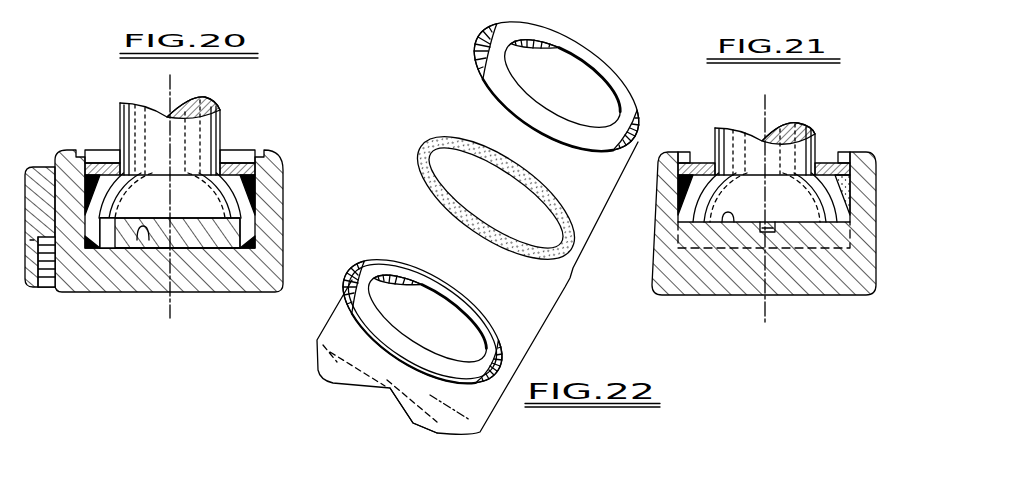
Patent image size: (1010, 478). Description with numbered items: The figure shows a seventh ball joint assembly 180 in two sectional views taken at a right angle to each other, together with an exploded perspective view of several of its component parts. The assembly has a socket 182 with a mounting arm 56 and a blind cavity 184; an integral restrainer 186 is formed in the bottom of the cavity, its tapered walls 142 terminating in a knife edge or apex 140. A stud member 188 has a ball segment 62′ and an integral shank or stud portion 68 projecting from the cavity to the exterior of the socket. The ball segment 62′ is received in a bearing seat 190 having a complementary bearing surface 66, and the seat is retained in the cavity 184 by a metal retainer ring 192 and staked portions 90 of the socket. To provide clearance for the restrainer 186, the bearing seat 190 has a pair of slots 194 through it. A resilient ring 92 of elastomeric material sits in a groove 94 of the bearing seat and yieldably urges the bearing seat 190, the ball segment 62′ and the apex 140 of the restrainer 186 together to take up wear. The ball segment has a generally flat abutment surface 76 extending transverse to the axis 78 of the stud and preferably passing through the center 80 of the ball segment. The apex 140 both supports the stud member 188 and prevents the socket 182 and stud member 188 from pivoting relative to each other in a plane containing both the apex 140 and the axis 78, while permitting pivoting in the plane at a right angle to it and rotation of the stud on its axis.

In FIG. 20, the mounting arm 56 is at (42, 170).
In FIG. 20, the ball segment 62′ is at (132, 187).
In FIG. 21, the ball segment 62′ is at (790, 183).
In FIG. 20, the bearing surface 66 is at (117, 237).
In FIG. 22, the bearing surface 66 is at (458, 328).
In FIG. 21, the bearing surface 66 is at (822, 207).
In FIG. 20, the shank or stud portion 68 is at (188, 132).
In FIG. 21, the shank or stud portion 68 is at (734, 152).
In FIG. 20, the abutment surface 76 is at (286, 223).
In FIG. 20, the axis 78 is at (170, 93).
In FIG. 21, the axis 78 is at (765, 112).
In FIG. 20, the center 80 is at (172, 225).
In FIG. 21, the center 80 is at (760, 227).
In FIG. 20, the staked portions 90 is at (254, 152).
In FIG. 21, the staked portions 90 is at (678, 152).
In FIG. 20, the resilient ring 92 is at (100, 173).
In FIG. 22, the resilient ring 92 is at (443, 147).
In FIG. 21, the resilient ring 92 is at (690, 175).
In FIG. 22, the groove 94 is at (350, 272).
In FIG. 20, the apex 140 is at (168, 222).
In FIG. 21, the apex 140 is at (728, 217).
In FIG. 20, the tapered walls 142 is at (143, 228).
In FIG. 20, the joint assembly 180 is at (68, 90).
In FIG. 21, the joint assembly 180 is at (834, 130).
In FIG. 20, the socket 182 is at (283, 170).
In FIG. 21, the socket 182 is at (655, 285).
In FIG. 20, the blind cavity 184 is at (100, 242).
In FIG. 20, the integral restrainer 186 is at (220, 237).
In FIG. 21, the integral restrainer 186 is at (746, 220).
In FIG. 20, the stud member 188 is at (228, 107).
In FIG. 21, the stud member 188 is at (812, 106).
In FIG. 20, the bearing seat 190 is at (258, 206).
In FIG. 22, the bearing seat 190 is at (314, 366).
In FIG. 21, the bearing seat 190 is at (677, 212).
In FIG. 20, the retainer ring 192 is at (240, 150).
In FIG. 22, the retainer ring 192 is at (538, 30).
In FIG. 21, the retainer ring 192 is at (847, 172).
In FIG. 22, the slots 194 is at (362, 390).